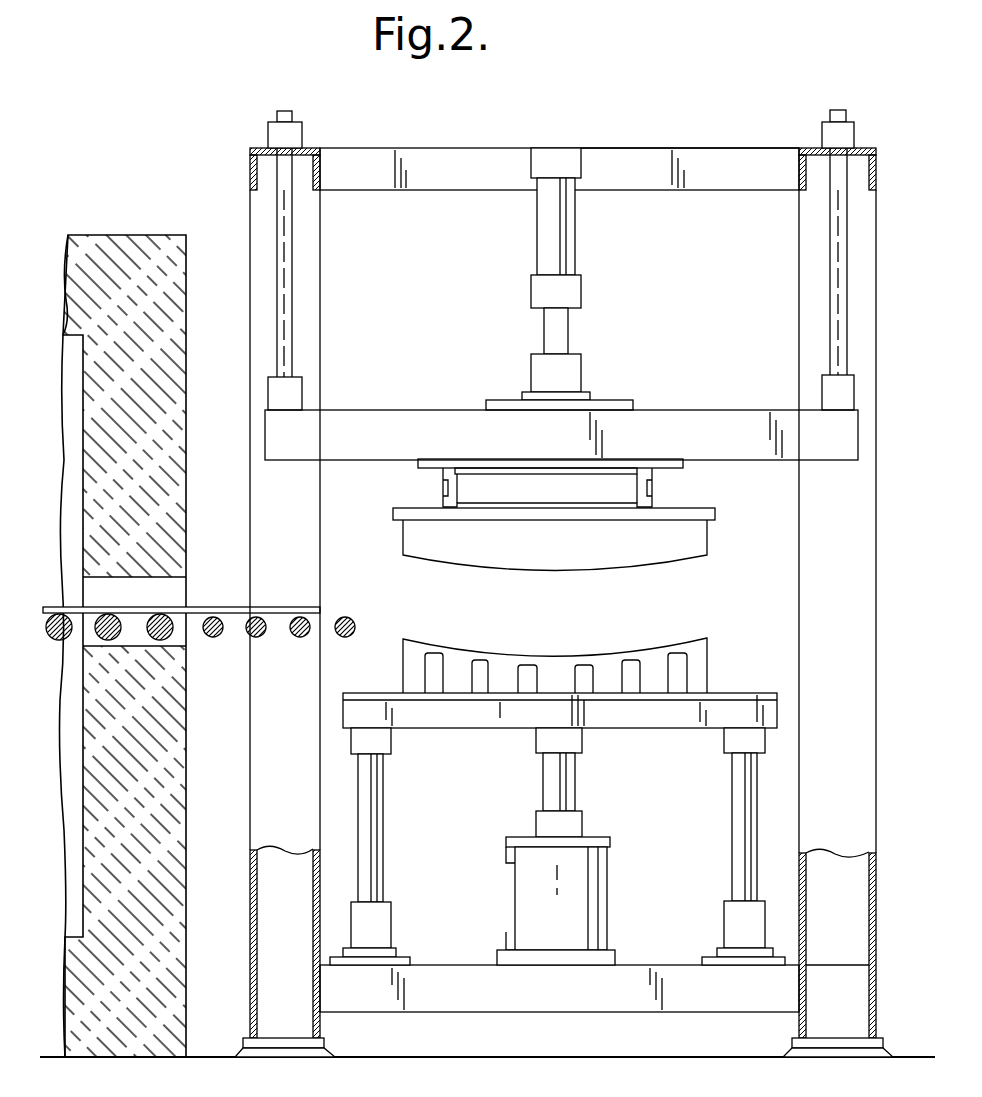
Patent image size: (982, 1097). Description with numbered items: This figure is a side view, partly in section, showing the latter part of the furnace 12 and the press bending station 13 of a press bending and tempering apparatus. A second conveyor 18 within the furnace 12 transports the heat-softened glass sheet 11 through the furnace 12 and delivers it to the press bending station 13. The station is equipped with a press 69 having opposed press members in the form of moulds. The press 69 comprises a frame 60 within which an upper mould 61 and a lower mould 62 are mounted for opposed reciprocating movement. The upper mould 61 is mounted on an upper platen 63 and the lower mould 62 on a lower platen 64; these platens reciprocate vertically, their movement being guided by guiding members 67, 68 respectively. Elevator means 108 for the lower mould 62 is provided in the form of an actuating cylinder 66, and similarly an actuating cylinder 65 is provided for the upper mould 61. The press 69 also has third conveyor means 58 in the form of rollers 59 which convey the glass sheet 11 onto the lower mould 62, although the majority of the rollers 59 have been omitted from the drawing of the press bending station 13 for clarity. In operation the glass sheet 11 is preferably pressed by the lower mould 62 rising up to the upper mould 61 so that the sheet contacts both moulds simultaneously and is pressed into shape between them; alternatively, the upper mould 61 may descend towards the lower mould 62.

The glass sheet 11 is at (197, 606).
The furnace 12 is at (125, 138).
The press bending station 13 is at (548, 72).
The second conveyor 18 is at (106, 616).
The third conveyor means 58 is at (244, 634).
The rollers 59 is at (343, 617).
The frame 60 is at (366, 160).
The upper mould 61 is at (418, 533).
The lower mould 62 is at (703, 672).
The platen 63 is at (378, 412).
The platen 64 is at (628, 720).
The actuating cylinder 65 is at (547, 221).
The actuating cylinder 66 is at (590, 882).
The guiding member 67 is at (284, 236).
The guiding member 68 is at (376, 837).
The press 69 is at (606, 142).
The elevator means 108 is at (769, 823).